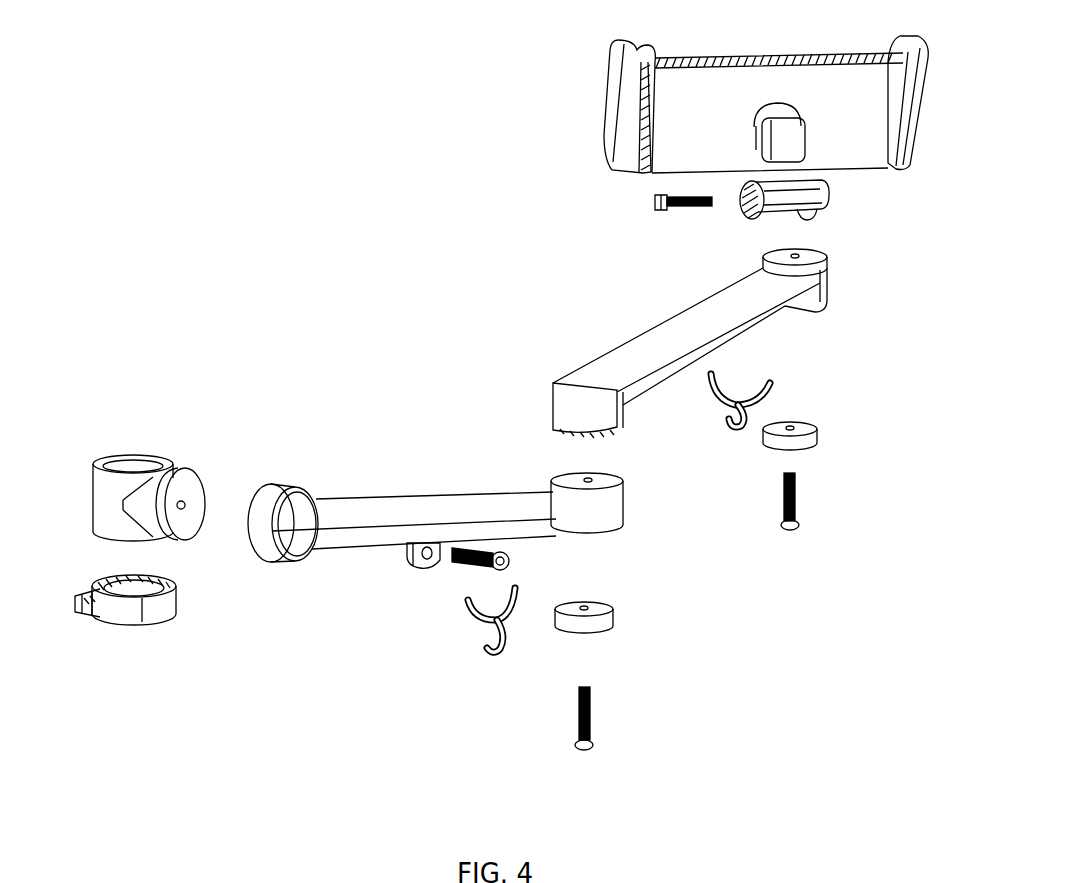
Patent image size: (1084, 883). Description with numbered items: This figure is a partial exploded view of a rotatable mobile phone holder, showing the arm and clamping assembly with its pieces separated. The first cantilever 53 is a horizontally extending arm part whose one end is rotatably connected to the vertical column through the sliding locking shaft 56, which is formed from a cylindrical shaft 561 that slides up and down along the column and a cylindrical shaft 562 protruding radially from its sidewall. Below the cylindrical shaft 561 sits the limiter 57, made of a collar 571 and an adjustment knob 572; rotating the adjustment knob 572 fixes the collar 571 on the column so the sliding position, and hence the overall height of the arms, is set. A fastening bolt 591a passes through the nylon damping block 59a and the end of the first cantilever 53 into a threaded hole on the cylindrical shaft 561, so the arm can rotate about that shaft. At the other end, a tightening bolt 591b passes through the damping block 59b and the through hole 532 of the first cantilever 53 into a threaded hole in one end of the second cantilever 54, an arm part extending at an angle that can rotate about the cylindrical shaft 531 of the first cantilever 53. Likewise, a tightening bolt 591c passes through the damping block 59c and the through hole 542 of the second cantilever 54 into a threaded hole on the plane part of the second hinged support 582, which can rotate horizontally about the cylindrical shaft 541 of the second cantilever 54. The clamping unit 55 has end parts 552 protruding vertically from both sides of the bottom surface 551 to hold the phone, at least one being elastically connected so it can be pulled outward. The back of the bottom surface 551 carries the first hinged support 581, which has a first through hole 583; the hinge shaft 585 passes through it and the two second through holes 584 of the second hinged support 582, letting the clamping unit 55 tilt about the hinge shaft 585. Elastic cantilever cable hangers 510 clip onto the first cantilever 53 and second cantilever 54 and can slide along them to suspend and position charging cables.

The clamping unit 55 is at (729, 113).
The bottom surface 551 is at (732, 55).
The end parts 552 is at (613, 82).
The first hinged support 581 is at (807, 143).
The second hinged support 582 is at (830, 197).
The first through hole 583 is at (760, 147).
The second through holes 584 is at (731, 213).
The hinge shaft 585 is at (661, 212).
The second cantilever 54 is at (647, 330).
The cylindrical shaft 541 is at (824, 288).
The through hole 542 is at (795, 252).
The first cantilever 53 is at (350, 547).
The cylindrical shaft 531 is at (627, 517).
The through hole 532 is at (597, 473).
The damping block 59a is at (418, 568).
The fastening bolt 591a is at (508, 569).
The cantilever cable hanger 510 is at (740, 427).
The damping block 59b is at (611, 629).
The tightening bolt 591b is at (592, 705).
The damping block 59c is at (813, 446).
The tightening bolt 591c is at (793, 532).
The sliding locking shaft 56 is at (167, 442).
The cylindrical shaft 561 is at (120, 453).
The cylindrical shaft 562 is at (190, 467).
The limiter 57 is at (128, 651).
The collar 571 is at (163, 627).
The adjustment knob 572 is at (85, 617).